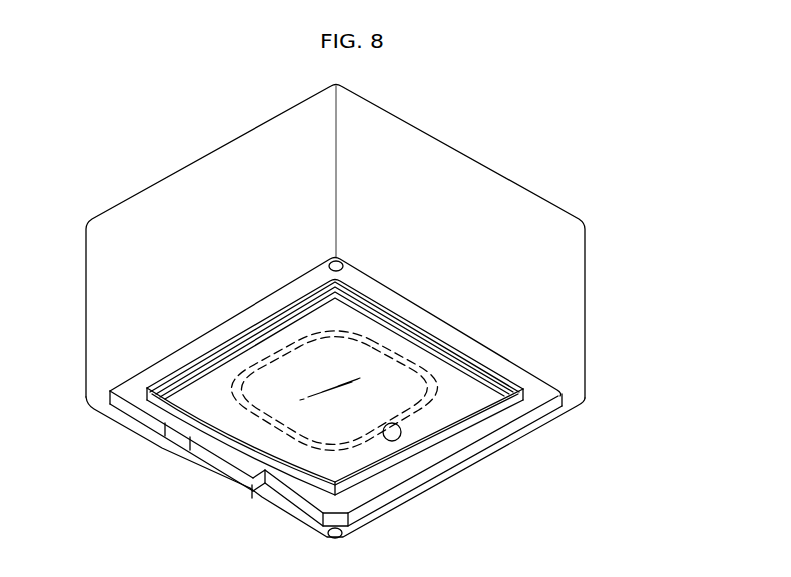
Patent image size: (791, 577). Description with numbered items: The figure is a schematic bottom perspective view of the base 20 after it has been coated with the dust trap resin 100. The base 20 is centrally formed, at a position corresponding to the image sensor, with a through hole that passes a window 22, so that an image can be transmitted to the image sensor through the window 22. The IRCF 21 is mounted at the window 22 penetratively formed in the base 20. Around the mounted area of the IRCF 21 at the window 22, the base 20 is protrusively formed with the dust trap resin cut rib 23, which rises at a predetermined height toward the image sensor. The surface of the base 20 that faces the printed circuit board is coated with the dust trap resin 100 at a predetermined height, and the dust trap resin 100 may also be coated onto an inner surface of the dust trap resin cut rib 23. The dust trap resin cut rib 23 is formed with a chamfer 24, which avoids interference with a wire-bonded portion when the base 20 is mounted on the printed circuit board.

The base 20 is at (578, 400).
The IRCF 21 is at (347, 427).
The window 22 is at (394, 424).
The dust trap resin cut rib 23 is at (512, 381).
The chamfer 24 is at (485, 370).
The dust trap resin 100 is at (492, 426).